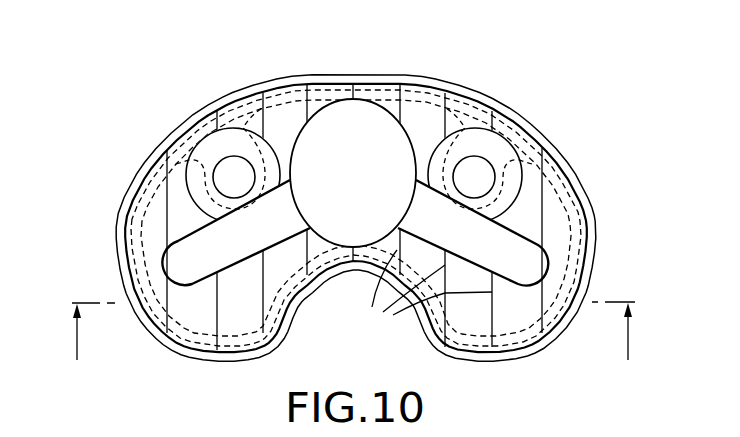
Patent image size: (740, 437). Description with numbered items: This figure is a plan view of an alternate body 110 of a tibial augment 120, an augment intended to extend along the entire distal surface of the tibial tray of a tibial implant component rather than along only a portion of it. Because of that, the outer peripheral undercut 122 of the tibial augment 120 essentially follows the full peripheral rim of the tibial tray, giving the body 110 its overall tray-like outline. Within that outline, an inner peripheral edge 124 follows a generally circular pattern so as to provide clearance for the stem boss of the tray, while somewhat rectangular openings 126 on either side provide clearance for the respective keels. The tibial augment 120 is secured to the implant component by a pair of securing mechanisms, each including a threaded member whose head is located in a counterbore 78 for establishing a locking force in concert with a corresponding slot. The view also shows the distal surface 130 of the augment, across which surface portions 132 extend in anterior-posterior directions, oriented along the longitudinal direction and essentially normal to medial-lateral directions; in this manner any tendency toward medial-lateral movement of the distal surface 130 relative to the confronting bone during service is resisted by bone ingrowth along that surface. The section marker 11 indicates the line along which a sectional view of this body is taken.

The section line 11- 11 is at (353, 312).
The counterbore 78 is at (272, 182).
The body 110 is at (220, 97).
The tibial augment 120 is at (180, 111).
The outer peripheral undercut 122 is at (150, 161).
The inner peripheral edge 124 is at (323, 110).
The openings 126 is at (190, 235).
The distal surface 130 is at (300, 121).
The surface portions 132 is at (440, 100).